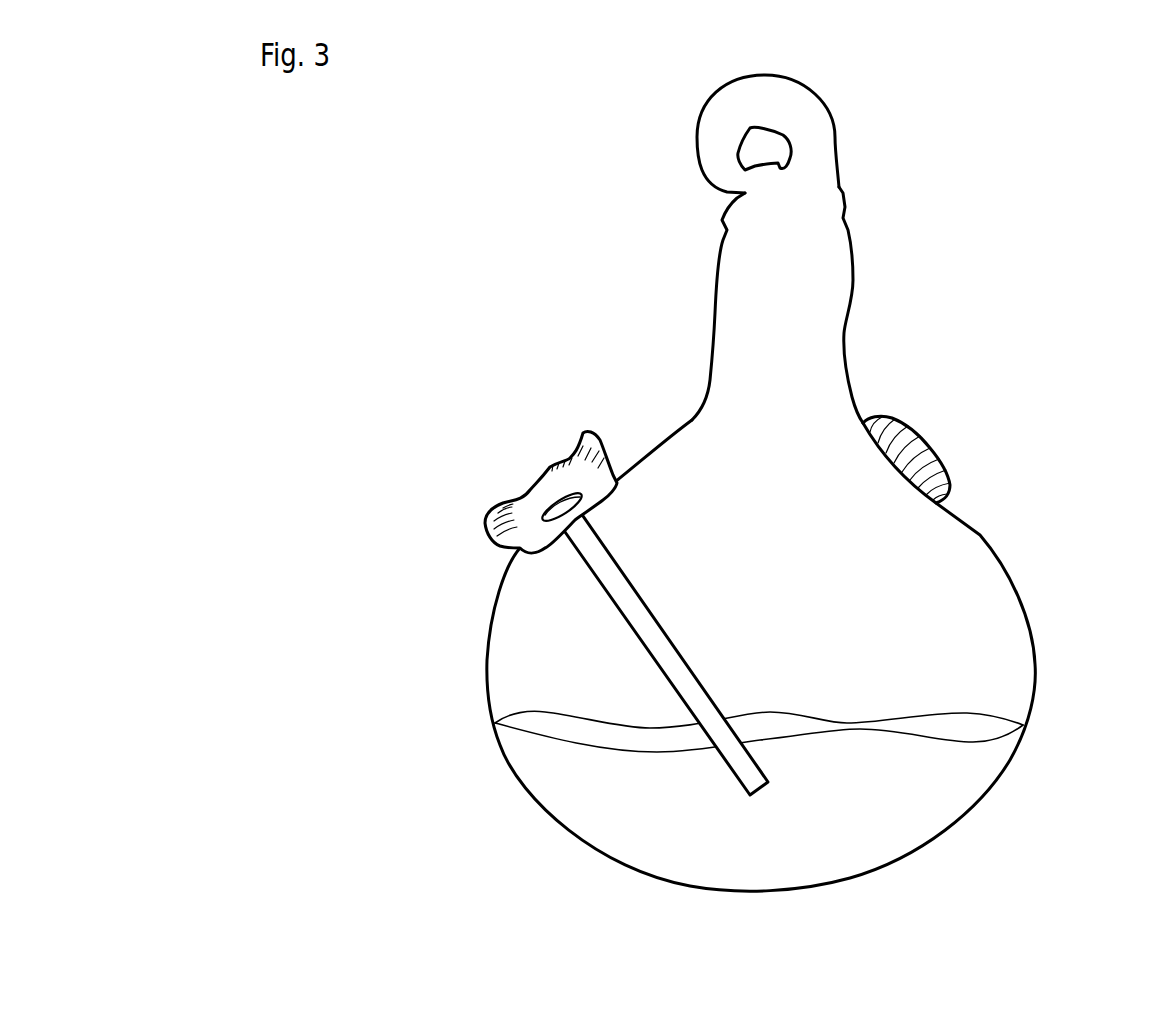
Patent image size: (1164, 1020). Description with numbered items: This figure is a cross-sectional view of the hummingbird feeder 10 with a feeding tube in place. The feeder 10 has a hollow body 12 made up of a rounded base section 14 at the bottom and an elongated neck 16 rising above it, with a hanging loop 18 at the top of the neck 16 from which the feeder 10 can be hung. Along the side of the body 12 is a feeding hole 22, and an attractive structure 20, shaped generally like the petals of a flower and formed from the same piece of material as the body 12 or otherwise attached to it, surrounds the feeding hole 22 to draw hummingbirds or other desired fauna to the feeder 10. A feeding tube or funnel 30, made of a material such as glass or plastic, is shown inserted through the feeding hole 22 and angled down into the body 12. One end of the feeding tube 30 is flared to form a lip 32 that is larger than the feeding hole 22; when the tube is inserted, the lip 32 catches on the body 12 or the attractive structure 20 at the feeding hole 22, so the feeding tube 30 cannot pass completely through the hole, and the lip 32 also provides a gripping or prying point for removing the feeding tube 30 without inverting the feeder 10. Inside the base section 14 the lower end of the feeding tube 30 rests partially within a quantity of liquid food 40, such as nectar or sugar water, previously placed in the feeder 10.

The hummingbird feeder 10 is at (548, 277).
The hollow body 12 is at (795, 462).
The rounded base section 14 is at (487, 670).
The elongated neck 16 is at (790, 332).
The hanging loop 18 is at (790, 106).
The attractive structure 20 is at (487, 523).
The feeding hole 22 is at (546, 491).
The feeding tube 30 is at (627, 600).
The lip 32 is at (540, 517).
The liquid food 40 is at (795, 840).